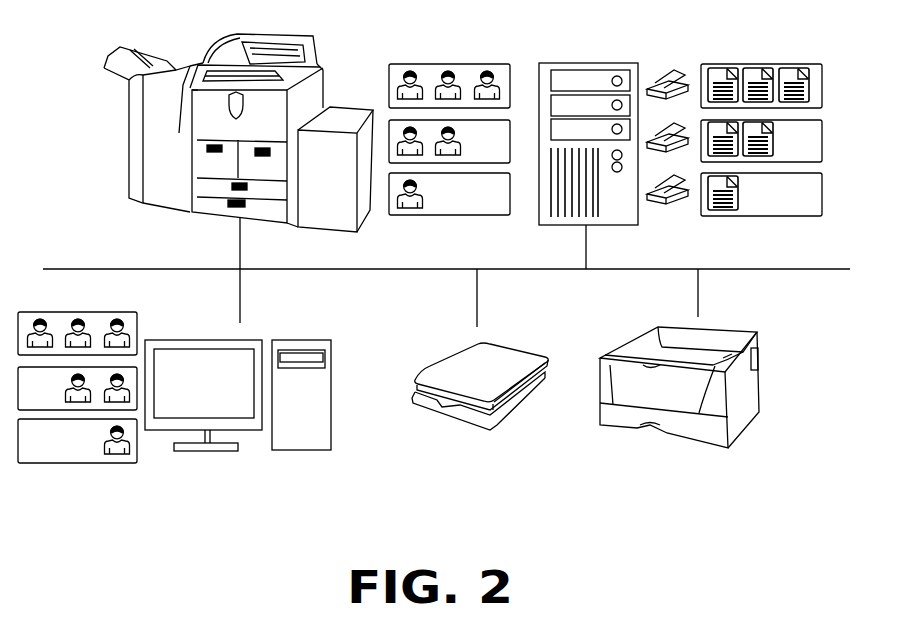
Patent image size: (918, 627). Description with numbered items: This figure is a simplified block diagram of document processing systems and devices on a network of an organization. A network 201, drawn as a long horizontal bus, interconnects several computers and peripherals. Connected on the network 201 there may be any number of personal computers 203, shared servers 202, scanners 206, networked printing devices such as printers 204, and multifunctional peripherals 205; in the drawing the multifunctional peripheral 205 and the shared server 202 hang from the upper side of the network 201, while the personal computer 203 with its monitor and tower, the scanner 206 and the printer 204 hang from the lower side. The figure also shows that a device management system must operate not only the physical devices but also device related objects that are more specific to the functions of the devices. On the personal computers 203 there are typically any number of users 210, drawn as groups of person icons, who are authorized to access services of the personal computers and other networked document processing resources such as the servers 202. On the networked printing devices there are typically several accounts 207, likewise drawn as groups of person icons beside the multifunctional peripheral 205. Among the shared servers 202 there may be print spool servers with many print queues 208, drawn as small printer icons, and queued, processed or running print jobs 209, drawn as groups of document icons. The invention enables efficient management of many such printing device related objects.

The network 201 is at (787, 268).
The shared servers 202 is at (613, 57).
The personal computers 203 is at (320, 339).
The printers 204 is at (748, 333).
The multifunctional peripherals 205 is at (328, 92).
The scanners 206 is at (527, 345).
The accounts 207 is at (475, 63).
The print queues 208 is at (668, 68).
The print jobs 209 is at (760, 63).
The users 210 is at (103, 311).